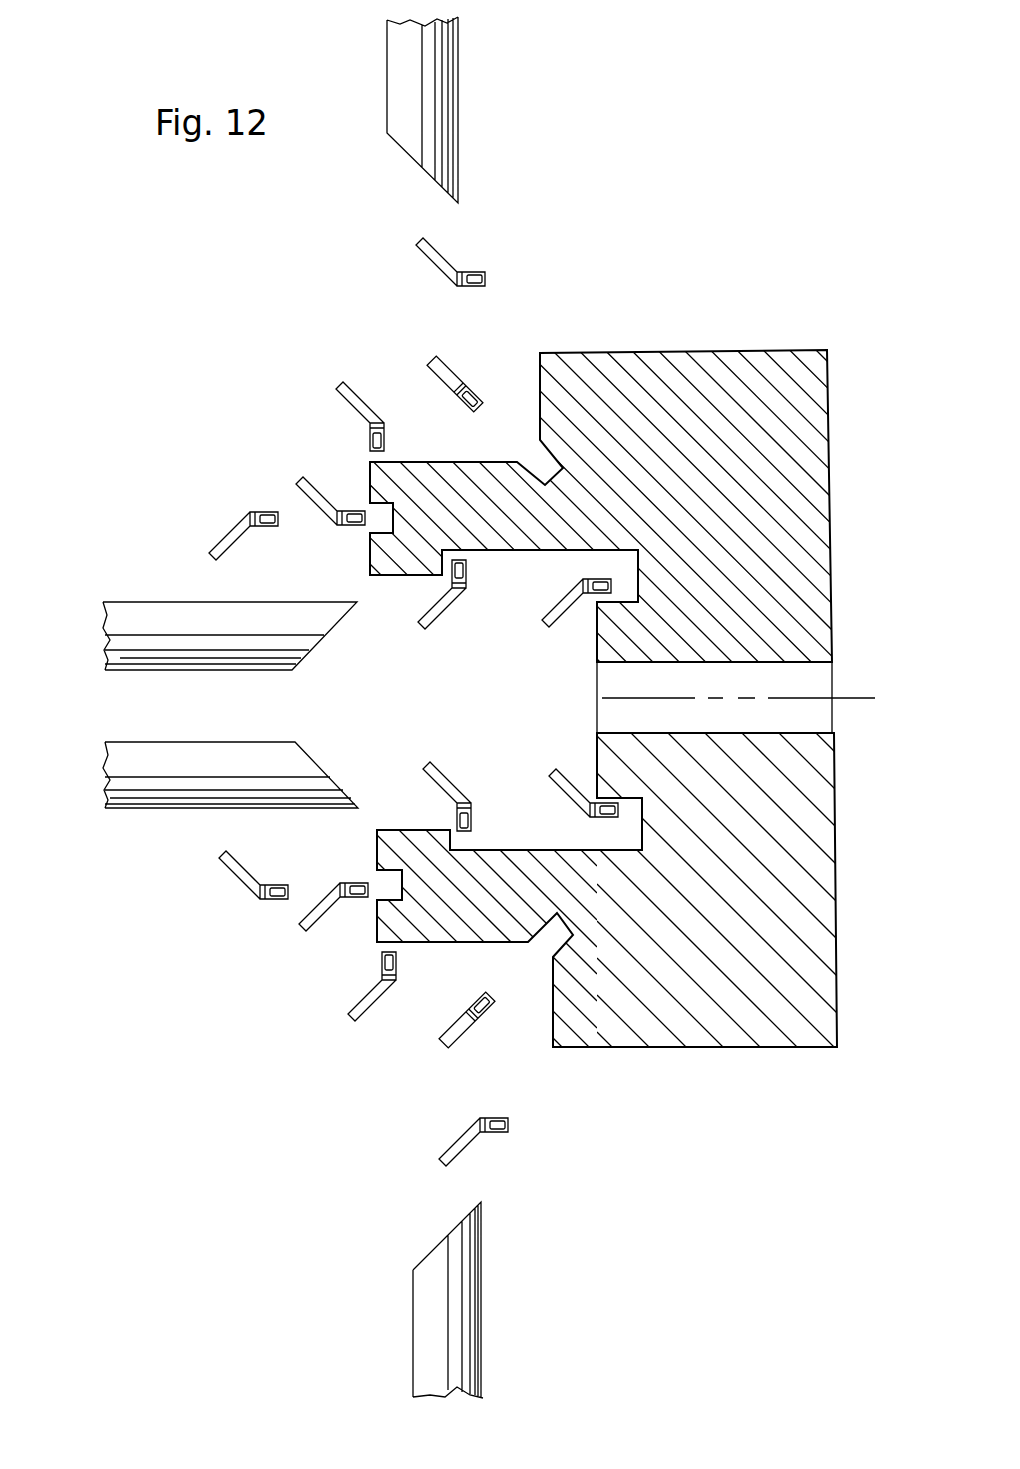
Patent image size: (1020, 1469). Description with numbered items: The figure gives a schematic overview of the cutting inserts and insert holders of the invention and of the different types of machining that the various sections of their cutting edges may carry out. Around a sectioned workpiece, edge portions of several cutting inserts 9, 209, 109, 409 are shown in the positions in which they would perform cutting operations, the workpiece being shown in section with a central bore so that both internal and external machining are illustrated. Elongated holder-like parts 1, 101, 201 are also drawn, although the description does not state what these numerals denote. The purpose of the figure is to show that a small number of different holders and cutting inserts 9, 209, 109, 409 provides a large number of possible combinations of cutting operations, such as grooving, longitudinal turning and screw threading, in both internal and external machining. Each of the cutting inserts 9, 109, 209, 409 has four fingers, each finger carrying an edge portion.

The cutting insert / blade 1 is at (346, 707).
The cutting insert / blade 101 is at (346, 707).
The cutting insert / blade 201 is at (468, 170).
The cutting insert 9 is at (496, 695).
The cutting insert 209 is at (458, 248).
The cutting insert 109 is at (360, 426).
The cutting insert 409 is at (436, 377).